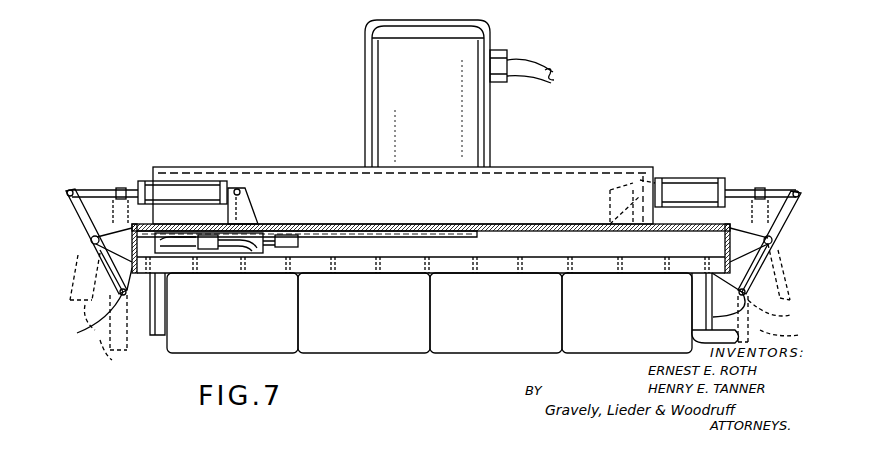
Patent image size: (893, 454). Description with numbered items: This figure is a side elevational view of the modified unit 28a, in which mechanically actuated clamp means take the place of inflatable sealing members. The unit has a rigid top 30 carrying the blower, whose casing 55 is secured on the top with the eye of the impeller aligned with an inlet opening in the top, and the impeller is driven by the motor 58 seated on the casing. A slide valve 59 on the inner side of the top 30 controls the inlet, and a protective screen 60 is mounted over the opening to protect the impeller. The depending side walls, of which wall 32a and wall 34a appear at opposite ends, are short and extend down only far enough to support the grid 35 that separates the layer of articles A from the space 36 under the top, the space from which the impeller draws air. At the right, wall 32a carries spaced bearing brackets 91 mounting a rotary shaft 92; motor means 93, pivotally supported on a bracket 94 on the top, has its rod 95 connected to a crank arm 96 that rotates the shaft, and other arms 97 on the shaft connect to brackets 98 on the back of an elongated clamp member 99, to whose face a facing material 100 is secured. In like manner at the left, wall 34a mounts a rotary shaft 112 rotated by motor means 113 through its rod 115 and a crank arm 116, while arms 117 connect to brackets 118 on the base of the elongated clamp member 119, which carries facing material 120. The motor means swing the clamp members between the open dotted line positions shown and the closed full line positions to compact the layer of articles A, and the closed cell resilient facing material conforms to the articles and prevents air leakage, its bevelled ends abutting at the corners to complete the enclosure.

The modified unit 28a is at (628, 117).
The top wall 30 is at (497, 224).
The depending side wall 32a is at (725, 240).
The depending side wall 34a is at (147, 238).
The grid 35 is at (498, 274).
The space 36 is at (548, 252).
The blower casing 55 is at (513, 167).
The motor 58 is at (459, 93).
The slide valve 59 is at (331, 236).
The protective screen 60 is at (410, 252).
The bearing brackets 91 is at (740, 232).
The rotary shaft 92 is at (772, 240).
The motor means 93 is at (682, 185).
The bracket 94 is at (622, 211).
The rod 95 is at (740, 190).
The crank arm 96 is at (789, 206).
The arms 97 is at (772, 273).
The brackets 98 is at (775, 322).
The clamp member 99 is at (690, 343).
The facing material 100 is at (692, 305).
The rotary shaft 112 is at (91, 242).
The motor means 113 is at (200, 183).
The rod 115 is at (88, 190).
The crank arm 116 is at (72, 208).
The arms 117 is at (107, 270).
The brackets 118 is at (105, 322).
The clamp member 119 is at (150, 323).
The facing material 120 is at (163, 317).